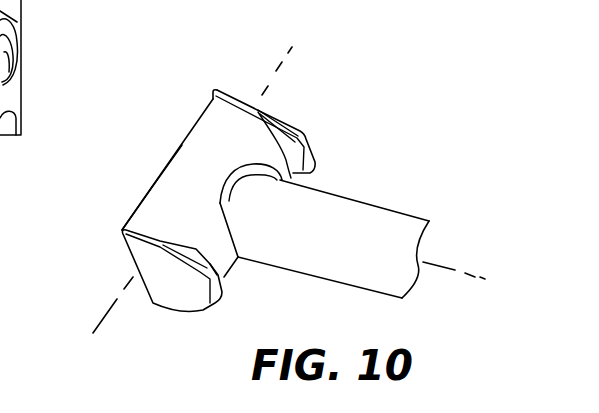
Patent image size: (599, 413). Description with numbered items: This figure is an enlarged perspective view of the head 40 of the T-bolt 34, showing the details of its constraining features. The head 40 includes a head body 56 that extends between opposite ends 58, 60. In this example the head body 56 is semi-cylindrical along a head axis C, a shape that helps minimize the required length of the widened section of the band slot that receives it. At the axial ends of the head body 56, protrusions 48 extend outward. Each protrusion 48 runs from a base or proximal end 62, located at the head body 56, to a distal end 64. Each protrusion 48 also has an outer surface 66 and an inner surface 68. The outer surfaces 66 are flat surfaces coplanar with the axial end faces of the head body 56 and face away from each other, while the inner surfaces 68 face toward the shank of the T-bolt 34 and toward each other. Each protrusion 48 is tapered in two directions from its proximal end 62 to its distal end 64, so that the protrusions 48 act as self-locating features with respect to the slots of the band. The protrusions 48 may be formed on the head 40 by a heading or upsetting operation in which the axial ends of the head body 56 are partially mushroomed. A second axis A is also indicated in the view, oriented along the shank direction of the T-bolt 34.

The T-bolt 34 is at (118, 112).
The head 40 is at (181, 143).
The protrusion 48 is at (181, 258).
The head body 56 is at (164, 185).
The end 58 is at (134, 220).
The end 60 is at (217, 101).
The proximal end 62 is at (251, 105).
The distal end 64 is at (310, 148).
The outer surface 66 is at (192, 296).
The inner surface 68 is at (297, 165).
The axis A is at (453, 270).
The head axis C is at (118, 298).